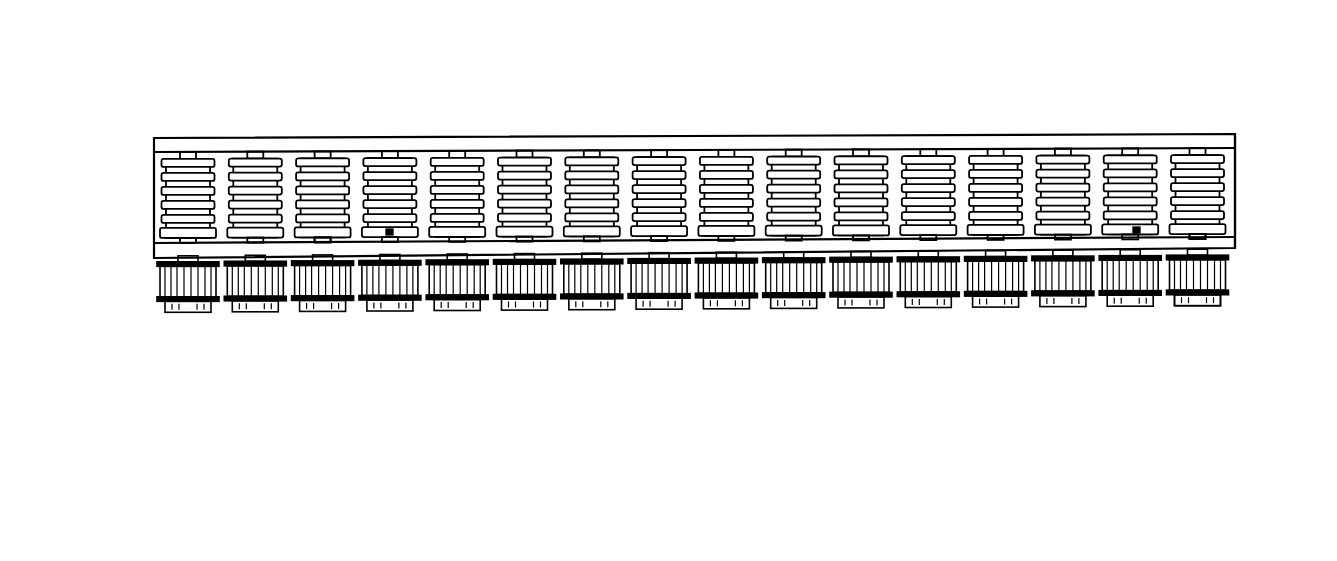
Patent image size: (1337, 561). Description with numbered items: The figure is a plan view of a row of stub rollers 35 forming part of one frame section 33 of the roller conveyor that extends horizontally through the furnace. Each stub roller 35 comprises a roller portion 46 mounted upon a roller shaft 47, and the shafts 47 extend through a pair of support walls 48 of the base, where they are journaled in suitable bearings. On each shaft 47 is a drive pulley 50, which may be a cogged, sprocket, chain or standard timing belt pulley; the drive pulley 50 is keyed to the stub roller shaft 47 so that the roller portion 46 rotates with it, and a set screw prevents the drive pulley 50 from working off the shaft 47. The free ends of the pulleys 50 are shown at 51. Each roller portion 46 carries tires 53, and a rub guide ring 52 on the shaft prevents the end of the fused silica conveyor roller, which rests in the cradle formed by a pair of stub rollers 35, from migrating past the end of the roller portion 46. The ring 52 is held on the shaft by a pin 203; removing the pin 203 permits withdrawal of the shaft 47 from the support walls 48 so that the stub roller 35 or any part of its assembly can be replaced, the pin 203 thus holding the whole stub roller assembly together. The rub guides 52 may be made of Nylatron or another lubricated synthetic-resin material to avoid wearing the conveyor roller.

The frame section 33 is at (1250, 261).
The stub roller 35 is at (1243, 178).
The roller portion 46 is at (1214, 157).
The roller shaft 47 is at (1203, 233).
The support wall 48 is at (245, 142).
The drive pulley 50 is at (1215, 272).
The free end of pulley 51 is at (1202, 300).
The rub guide ring 52 is at (322, 233).
The tire 53 is at (1030, 165).
The pin 203 is at (390, 232).